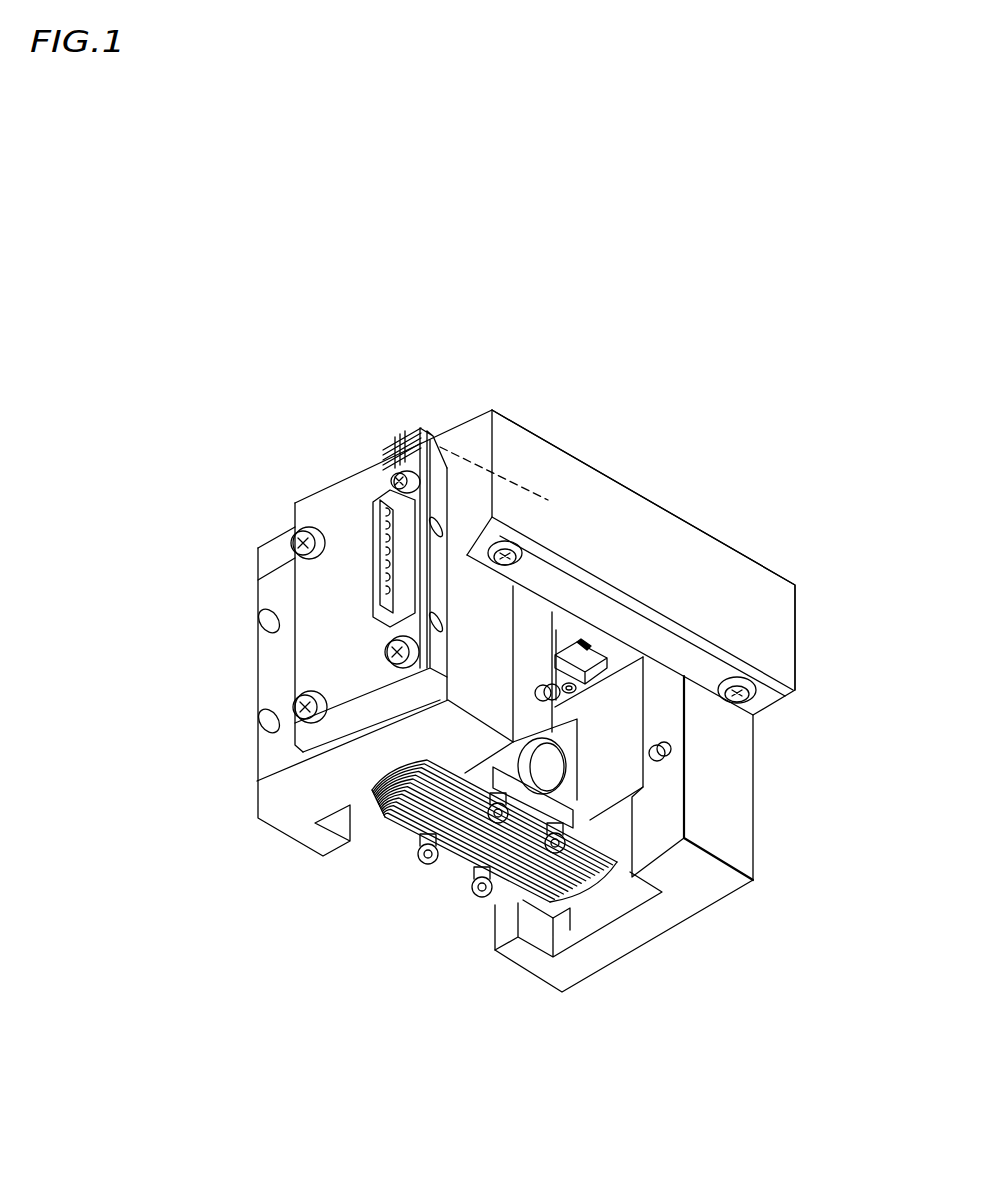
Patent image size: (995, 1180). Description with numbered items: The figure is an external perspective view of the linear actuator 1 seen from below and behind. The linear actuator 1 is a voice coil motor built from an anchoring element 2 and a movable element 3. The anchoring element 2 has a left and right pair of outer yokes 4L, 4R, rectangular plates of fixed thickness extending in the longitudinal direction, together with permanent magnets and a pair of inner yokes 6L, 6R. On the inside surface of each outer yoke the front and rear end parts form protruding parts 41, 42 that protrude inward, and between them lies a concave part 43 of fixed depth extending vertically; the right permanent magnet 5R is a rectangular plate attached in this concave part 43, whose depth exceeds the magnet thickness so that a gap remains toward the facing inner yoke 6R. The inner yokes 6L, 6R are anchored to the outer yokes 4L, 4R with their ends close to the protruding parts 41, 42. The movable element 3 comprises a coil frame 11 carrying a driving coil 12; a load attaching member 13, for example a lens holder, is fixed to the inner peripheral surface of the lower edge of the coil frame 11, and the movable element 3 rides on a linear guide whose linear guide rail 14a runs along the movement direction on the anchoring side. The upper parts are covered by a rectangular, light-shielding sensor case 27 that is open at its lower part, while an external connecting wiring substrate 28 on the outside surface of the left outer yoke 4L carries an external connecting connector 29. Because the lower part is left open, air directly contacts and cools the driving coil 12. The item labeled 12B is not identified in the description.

The linear actuator 1 is at (649, 468).
The anchoring element 2 is at (702, 917).
The movable element 3 is at (452, 878).
The left outer yoke 4L is at (292, 845).
The right outer yoke 4R is at (622, 958).
The right permanent magnet 5R is at (615, 866).
The left inner yoke 6L is at (380, 828).
The right inner yoke 6R is at (645, 810).
The coil frame 11 is at (522, 817).
The driving coil 12 is at (512, 893).
The fixing bolt 12B is at (458, 830).
The load attaching member 13 is at (560, 802).
The linear guide rail 14a is at (588, 665).
The light-shielding sensor case 27 is at (548, 463).
The external connecting wiring substrate 28 is at (330, 495).
The external connecting connector 29 is at (372, 530).
The protruding part 41 is at (322, 846).
The protruding part 42 is at (453, 742).
The concave part 43 is at (348, 804).